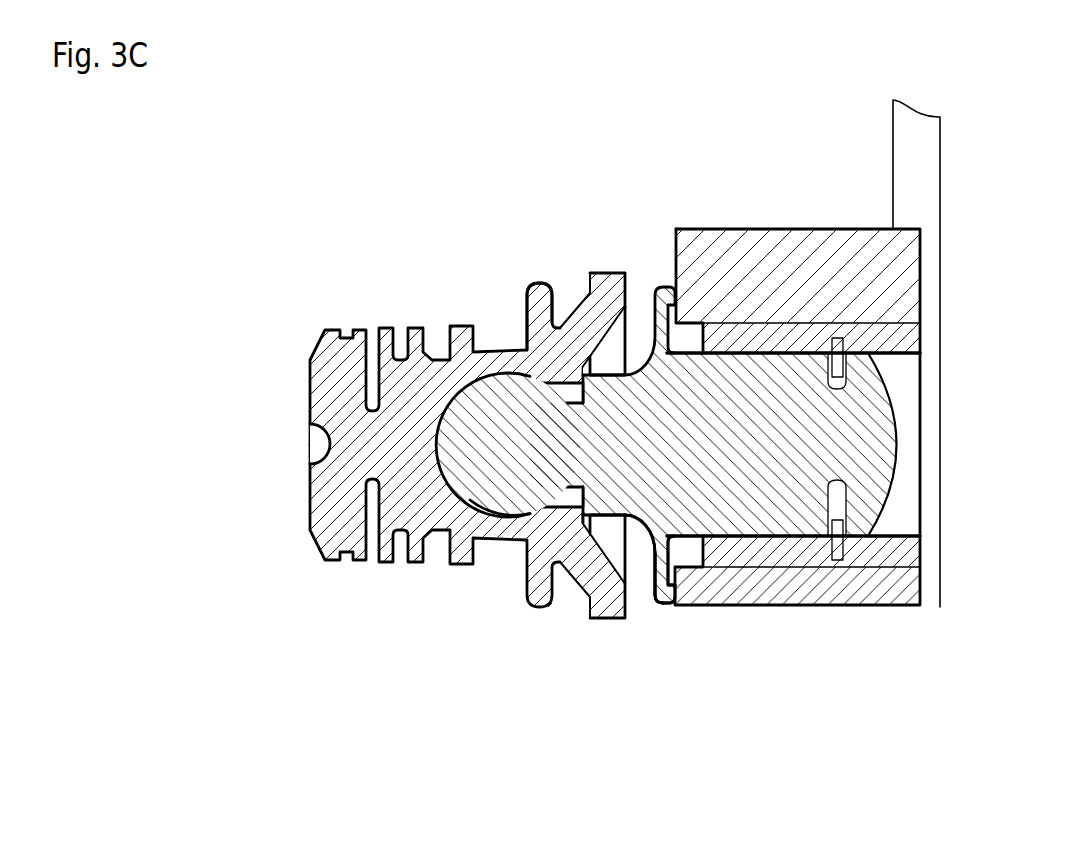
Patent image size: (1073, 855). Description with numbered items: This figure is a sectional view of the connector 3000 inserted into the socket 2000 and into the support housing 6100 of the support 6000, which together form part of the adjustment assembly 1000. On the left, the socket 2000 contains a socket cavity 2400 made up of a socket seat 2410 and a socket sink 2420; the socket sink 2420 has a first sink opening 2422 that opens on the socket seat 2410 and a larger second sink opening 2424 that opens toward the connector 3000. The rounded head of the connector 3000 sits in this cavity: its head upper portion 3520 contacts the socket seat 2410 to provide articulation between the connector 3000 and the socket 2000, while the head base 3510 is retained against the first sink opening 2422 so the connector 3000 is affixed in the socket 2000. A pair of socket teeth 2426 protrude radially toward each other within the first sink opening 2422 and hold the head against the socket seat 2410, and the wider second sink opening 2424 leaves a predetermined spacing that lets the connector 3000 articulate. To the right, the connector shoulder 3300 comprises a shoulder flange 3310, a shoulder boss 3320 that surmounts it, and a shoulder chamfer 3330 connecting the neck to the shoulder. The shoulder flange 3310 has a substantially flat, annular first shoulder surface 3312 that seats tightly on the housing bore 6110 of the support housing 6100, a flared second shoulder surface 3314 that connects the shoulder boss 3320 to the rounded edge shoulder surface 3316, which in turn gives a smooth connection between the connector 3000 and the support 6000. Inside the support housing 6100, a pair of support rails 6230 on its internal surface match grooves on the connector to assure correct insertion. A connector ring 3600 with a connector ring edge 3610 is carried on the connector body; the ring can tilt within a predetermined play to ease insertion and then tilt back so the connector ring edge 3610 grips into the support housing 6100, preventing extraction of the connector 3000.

The adjustment assembly 1000 is at (268, 122).
The socket 2000 is at (350, 286).
The socket cavity 2400 is at (395, 293).
The socket seat 2410 is at (440, 413).
The socket sink 2420 is at (590, 333).
The first sink opening 2422 is at (537, 383).
The second sink opening 2424 is at (624, 271).
The socket teeth 2426 is at (550, 380).
The connector 3000 is at (653, 262).
The connector shoulder 3300 is at (452, 690).
The shoulder flange 3310 is at (634, 624).
The first shoulder surface 3312 is at (675, 572).
The second shoulder surface 3314 is at (642, 573).
The edge shoulder surface 3316 is at (660, 607).
The shoulder boss 3320 is at (573, 527).
The shoulder chamfer 3330 is at (636, 548).
The head base 3510 is at (520, 490).
The head upper portion 3520 is at (513, 454).
The connector ring 3600 is at (842, 543).
The connector ring edge 3610 is at (833, 562).
The support 6000 is at (942, 220).
The support housing 6100 is at (829, 190).
The housing bore 6110 is at (685, 303).
The support rails 6230 is at (920, 343).